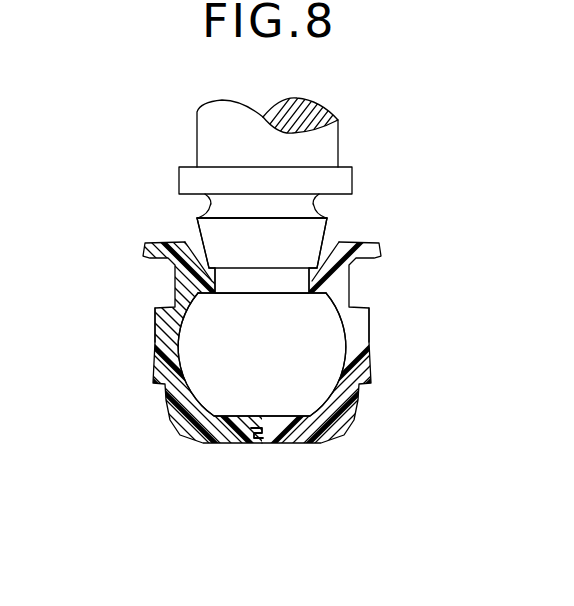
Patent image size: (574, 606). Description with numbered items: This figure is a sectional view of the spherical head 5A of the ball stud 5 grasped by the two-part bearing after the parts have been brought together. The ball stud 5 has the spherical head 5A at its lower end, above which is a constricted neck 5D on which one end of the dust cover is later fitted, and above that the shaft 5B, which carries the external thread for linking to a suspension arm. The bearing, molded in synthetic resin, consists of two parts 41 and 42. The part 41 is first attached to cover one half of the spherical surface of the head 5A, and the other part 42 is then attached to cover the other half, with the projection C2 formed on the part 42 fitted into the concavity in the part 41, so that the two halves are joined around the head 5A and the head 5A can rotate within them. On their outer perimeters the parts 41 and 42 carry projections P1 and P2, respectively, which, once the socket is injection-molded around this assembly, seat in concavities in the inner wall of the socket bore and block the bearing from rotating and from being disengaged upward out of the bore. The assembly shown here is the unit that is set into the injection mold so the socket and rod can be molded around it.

The ball stud 5 is at (182, 155).
The shaft 5B is at (317, 147).
The constricted neck 5D is at (323, 205).
The spherical head 5A is at (303, 382).
The projection P1 is at (153, 327).
The projection P2 is at (371, 338).
The bearing part 41 is at (190, 414).
The bearing part 42 is at (340, 426).
The projection C2 is at (257, 433).